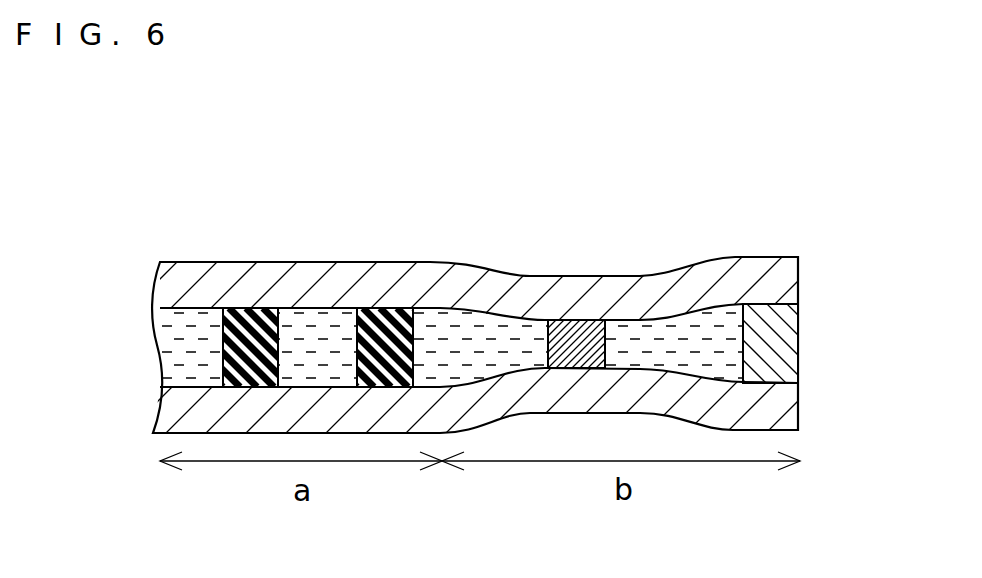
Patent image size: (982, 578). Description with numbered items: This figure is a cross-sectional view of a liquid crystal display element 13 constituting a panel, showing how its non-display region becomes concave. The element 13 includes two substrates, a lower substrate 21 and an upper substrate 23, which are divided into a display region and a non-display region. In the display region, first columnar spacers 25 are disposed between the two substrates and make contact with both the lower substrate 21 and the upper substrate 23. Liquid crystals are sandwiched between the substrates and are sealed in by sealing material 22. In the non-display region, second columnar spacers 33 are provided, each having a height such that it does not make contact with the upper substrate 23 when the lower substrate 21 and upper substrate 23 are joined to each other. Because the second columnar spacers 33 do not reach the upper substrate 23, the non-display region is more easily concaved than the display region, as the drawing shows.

The liquid crystal display element 13 is at (789, 190).
The lower substrate 21 is at (788, 405).
The sealing material 22 is at (788, 347).
The upper substrate 23 is at (787, 283).
The first columnar spacers 25 is at (377, 308).
The second columnar spacers 33 is at (582, 320).